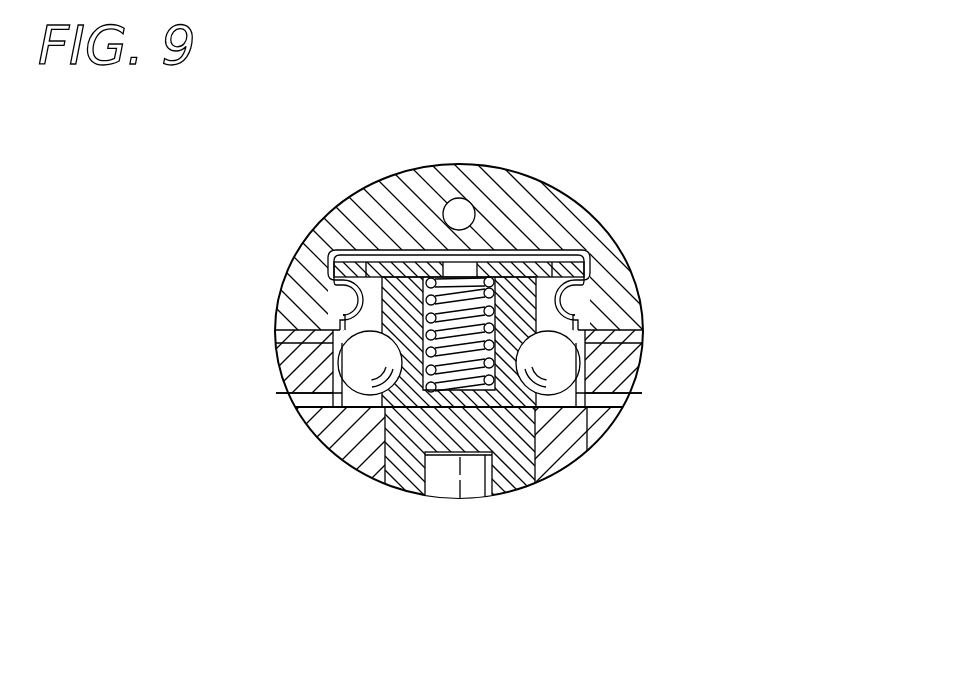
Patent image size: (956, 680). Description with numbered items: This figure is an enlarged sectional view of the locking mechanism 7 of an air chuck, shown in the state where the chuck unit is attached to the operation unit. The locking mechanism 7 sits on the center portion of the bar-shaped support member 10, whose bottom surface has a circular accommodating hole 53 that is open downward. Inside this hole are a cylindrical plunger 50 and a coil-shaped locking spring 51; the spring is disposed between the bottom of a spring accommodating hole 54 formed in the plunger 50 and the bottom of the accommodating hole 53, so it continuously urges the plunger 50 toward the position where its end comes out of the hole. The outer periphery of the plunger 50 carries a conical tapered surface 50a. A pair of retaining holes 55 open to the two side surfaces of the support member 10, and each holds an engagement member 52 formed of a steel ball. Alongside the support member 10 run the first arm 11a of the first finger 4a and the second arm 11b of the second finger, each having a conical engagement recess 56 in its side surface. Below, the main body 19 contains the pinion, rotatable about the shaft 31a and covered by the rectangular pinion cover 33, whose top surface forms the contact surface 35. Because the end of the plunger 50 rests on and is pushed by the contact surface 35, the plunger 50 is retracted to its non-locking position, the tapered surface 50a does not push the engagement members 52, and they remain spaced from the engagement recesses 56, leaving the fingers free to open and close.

The first finger 4a is at (357, 215).
The locking mechanism 7 is at (472, 300).
The support member 10 is at (330, 252).
The first arm 11a is at (625, 368).
The second arm 11b is at (302, 383).
The main body 19 is at (363, 453).
The shaft 31a is at (445, 472).
The pinion cover 33 is at (513, 460).
The contact surface 35 is at (543, 437).
The plunger 50 is at (403, 310).
The tapered surface 50a is at (352, 303).
The locking spring 51 is at (455, 305).
The engagement member 52 is at (360, 355).
The accommodating hole 53 is at (528, 252).
The spring accommodating hole 54 is at (417, 447).
The retaining hole 55 is at (336, 412).
The engagement recess 56 is at (328, 362).